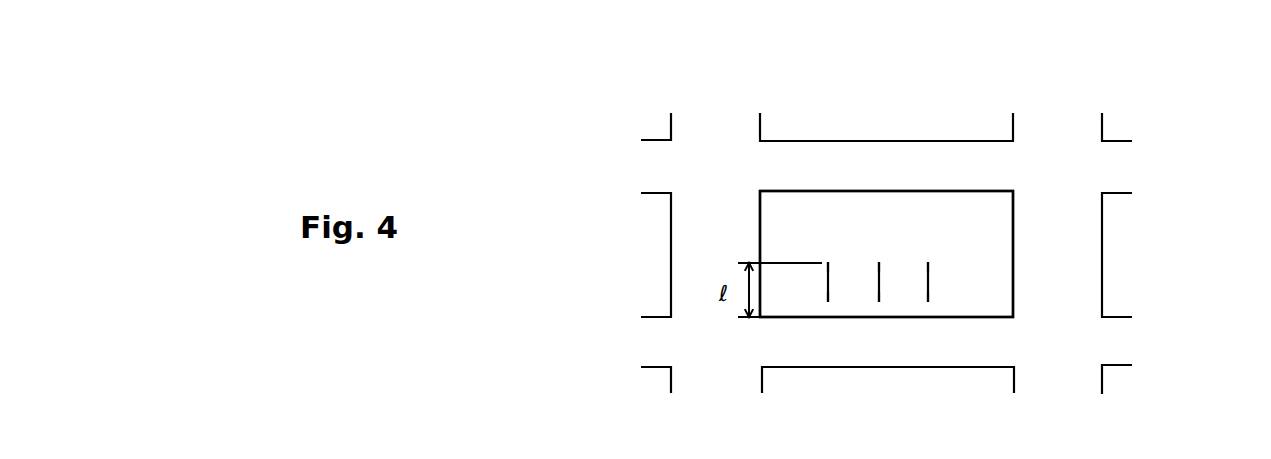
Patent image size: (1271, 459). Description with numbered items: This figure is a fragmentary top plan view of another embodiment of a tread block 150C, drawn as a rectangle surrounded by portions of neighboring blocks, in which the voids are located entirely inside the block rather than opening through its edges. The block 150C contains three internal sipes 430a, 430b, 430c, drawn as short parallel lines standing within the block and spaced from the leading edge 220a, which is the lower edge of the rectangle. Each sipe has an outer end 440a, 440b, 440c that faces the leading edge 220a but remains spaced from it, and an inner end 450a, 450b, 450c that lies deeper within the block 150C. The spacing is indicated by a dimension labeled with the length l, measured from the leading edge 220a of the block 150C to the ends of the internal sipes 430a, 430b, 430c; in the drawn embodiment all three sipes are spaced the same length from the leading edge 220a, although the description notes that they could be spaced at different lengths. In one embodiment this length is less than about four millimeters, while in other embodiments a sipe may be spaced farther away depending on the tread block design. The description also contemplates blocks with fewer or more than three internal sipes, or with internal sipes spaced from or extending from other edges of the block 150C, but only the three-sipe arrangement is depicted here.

The block 150C is at (1025, 182).
The leading edge 220a is at (822, 317).
The internal sipe 430a is at (829, 284).
The internal sipe 430b is at (880, 284).
The internal sipe 430c is at (929, 284).
The outer end 440a is at (825, 303).
The outer end 440b is at (880, 305).
The outer end 440c is at (930, 303).
The inner end 450a is at (827, 257).
The inner end 450b is at (879, 257).
The inner end 450c is at (928, 257).